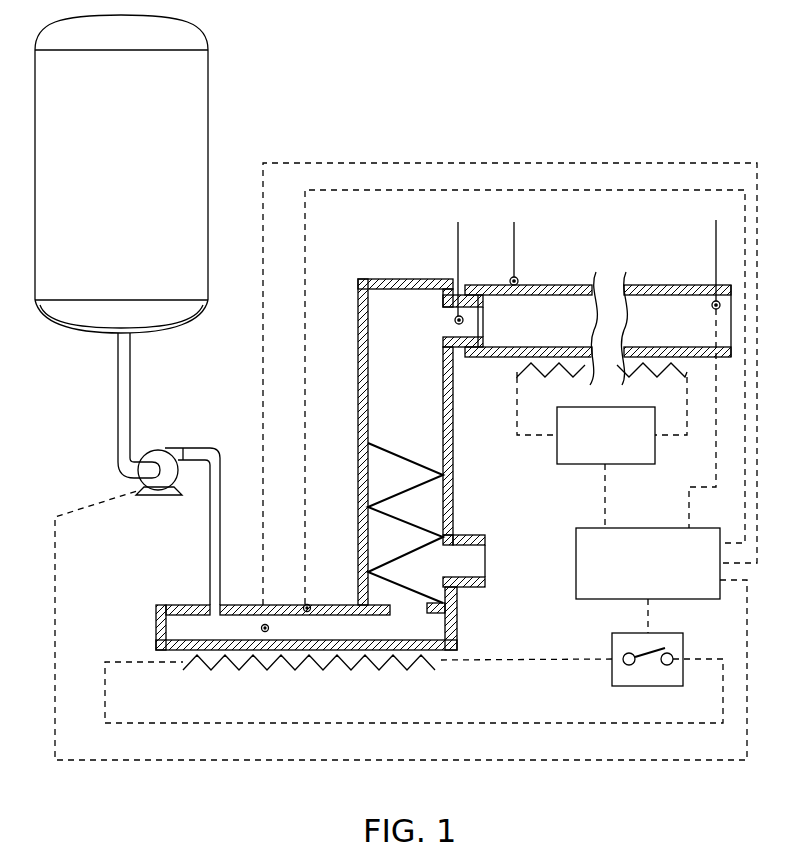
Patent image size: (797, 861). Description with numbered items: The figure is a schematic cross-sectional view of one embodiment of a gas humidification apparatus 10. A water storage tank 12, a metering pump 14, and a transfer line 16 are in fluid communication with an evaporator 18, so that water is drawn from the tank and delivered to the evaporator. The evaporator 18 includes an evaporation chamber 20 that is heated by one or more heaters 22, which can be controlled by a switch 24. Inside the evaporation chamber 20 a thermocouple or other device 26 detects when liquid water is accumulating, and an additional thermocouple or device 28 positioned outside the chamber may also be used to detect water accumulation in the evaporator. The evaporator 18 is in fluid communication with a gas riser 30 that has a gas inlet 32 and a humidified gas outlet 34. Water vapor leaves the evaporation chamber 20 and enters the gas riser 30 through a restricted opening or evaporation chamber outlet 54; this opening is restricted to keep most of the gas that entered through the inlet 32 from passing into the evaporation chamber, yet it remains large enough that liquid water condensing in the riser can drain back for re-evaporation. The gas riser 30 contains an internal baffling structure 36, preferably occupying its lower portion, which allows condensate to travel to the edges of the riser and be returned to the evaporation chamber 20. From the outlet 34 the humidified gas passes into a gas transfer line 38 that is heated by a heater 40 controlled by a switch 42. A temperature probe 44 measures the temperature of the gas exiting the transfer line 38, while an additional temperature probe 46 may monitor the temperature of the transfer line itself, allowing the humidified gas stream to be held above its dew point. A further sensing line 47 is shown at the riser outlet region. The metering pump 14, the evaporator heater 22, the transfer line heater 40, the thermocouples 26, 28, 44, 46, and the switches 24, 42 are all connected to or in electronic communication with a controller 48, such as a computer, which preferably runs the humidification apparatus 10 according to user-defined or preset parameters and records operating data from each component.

The humidification apparatus 10 is at (433, 62).
The water storage tank 12 is at (136, 189).
The metering pump 14 is at (159, 448).
The transfer line 16 is at (118, 416).
The evaporator 18 is at (160, 610).
The evaporation chamber 20 is at (333, 627).
The heater 22 is at (318, 665).
The switch 24 is at (660, 633).
The thermocouple or other device 26 is at (263, 367).
The thermocouple or device 28 is at (305, 418).
The gas riser 30 is at (395, 305).
The gas inlet 32 is at (485, 560).
The humidified gas outlet 34 is at (487, 318).
The internal baffling structure 36 is at (432, 483).
The gas transfer line 38 is at (643, 285).
The heater 40 is at (545, 378).
The switch 42 is at (620, 446).
The temperature probe 44 is at (714, 232).
The temperature probe 46 is at (514, 240).
The sensor wire 47 is at (458, 240).
The controller 48 is at (662, 583).
The evaporation chamber outlet 54 is at (412, 610).